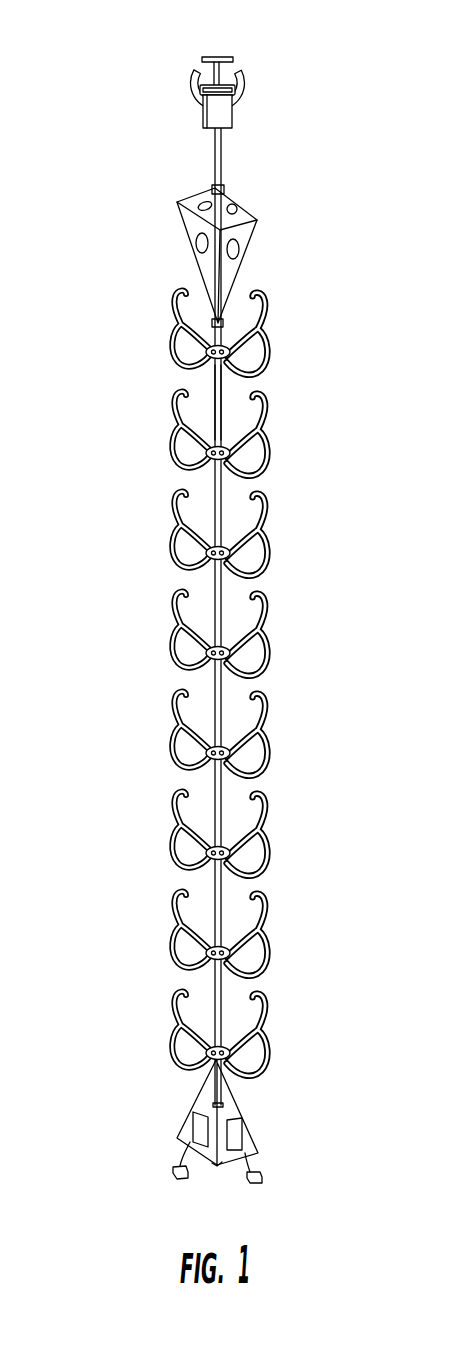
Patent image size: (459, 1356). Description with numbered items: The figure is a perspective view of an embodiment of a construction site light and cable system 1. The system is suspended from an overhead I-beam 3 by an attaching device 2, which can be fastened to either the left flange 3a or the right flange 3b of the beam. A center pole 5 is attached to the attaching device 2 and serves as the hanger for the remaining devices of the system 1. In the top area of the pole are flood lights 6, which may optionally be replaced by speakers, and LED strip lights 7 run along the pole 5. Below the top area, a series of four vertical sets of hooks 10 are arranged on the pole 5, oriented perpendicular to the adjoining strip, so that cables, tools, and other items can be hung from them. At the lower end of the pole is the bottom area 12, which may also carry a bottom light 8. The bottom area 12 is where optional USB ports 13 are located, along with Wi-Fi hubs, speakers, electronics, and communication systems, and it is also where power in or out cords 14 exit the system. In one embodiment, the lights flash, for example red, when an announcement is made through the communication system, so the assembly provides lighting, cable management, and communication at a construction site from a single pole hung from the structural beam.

The construction site light and cable system 1 is at (128, 537).
The attaching device 2 is at (222, 116).
The I-beam 3 is at (230, 64).
The left flange 3a is at (203, 83).
The right flange 3b is at (235, 83).
The center pole 5 is at (212, 168).
The flood lights 6 is at (236, 248).
The LED strip lights 7 is at (220, 396).
The bottom light 8 is at (217, 1165).
The vertical sets of hooks 10 is at (175, 643).
The bottom area 12 is at (273, 1140).
The USB ports 13 is at (197, 1128).
The power in or out cords 14 is at (173, 1168).